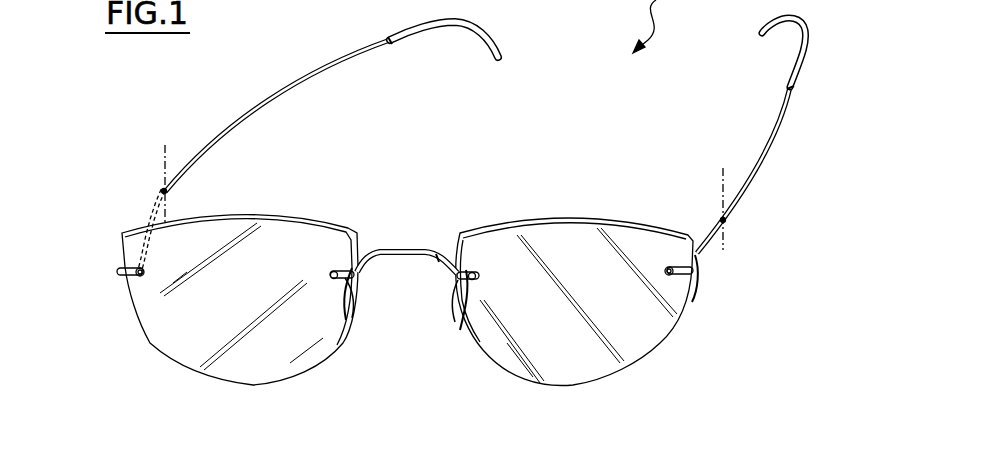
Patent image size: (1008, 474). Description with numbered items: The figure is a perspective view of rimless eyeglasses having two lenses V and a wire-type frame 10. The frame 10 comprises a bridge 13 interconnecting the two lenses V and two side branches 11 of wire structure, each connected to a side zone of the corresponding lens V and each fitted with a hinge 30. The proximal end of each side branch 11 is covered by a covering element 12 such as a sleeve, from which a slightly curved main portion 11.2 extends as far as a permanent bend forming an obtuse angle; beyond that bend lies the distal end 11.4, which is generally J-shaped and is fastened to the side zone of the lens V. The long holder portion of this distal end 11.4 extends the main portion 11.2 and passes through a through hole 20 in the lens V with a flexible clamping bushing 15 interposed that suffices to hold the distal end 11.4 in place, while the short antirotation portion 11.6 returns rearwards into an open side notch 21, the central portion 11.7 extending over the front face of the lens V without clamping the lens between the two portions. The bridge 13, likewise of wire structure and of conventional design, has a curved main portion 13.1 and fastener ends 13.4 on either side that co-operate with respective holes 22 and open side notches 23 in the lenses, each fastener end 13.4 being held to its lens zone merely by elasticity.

The frame 10 is at (205, 118).
The side branch 11 is at (286, 90).
The main portion 11.2 is at (272, 108).
The distal end 11.4 is at (129, 280).
The short antirotation portion 11.6 is at (120, 273).
The central portion 11.7 is at (695, 303).
The covering element 12 is at (482, 37).
The bridge 13 is at (434, 251).
The curved main portion 13.1 is at (403, 250).
The fastener end 13.4 is at (340, 340).
The flexible clamping bushing 15 is at (143, 266).
The through hole 20 is at (147, 318).
The open side notch 21 is at (127, 265).
The hole 22 is at (343, 270).
The open side notch 23 is at (355, 281).
The hinge 30 is at (164, 191).
The lens V is at (233, 360).